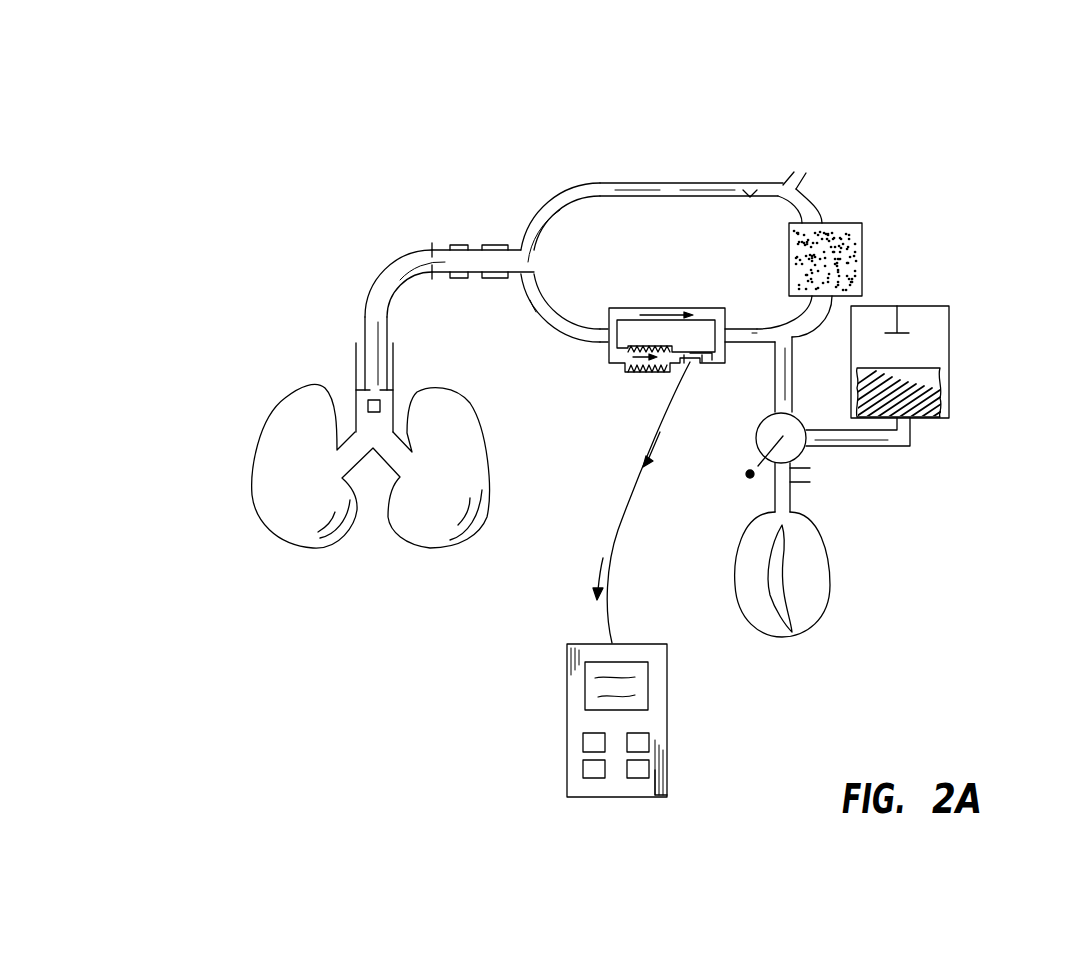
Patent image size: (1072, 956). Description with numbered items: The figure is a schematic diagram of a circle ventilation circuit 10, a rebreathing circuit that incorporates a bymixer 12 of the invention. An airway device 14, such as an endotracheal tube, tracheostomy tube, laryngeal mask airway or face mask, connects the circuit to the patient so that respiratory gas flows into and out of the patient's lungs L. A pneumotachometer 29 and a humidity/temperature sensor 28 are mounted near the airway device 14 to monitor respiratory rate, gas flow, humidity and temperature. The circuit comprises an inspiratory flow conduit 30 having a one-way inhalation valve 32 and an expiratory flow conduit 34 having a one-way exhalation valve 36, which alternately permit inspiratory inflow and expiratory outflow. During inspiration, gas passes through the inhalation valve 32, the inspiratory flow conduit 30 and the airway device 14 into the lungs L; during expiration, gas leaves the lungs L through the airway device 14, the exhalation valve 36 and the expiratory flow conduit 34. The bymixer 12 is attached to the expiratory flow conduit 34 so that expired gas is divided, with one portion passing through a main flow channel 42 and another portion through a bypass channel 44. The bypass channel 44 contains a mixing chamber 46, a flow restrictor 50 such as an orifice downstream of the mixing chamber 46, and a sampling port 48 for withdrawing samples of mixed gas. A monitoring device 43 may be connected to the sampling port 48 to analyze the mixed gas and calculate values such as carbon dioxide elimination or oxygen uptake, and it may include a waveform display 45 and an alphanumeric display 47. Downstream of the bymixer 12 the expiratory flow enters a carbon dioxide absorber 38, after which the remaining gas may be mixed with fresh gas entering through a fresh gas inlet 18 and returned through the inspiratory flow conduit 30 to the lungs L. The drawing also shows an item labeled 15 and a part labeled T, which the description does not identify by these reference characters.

The circle ventilation circuit 10 is at (968, 131).
The bymixer device 12 is at (598, 360).
The airway device 14 is at (385, 285).
The reservoir 15 is at (948, 340).
The fresh gas inlet 18 is at (805, 168).
The humidity/temperature sensor 28 is at (452, 243).
The pneumotachometer 29 is at (492, 245).
The inspiratory flow conduit 30 is at (650, 186).
The one-way inhalation valve 32 is at (745, 186).
The expiratory flow conduit 34 is at (535, 317).
The one-way exhalation valve 36 is at (748, 337).
The CO2 absorber 38 is at (868, 260).
The main flow channel 42 is at (683, 312).
The monitoring device 43 is at (567, 723).
The bypass channel 44 is at (665, 372).
The waveform display 45 is at (648, 697).
The mixing chamber 46 is at (660, 365).
The alphanumeric display 47 is at (663, 768).
The sampling port 48 is at (687, 363).
The flow restrictor 50 is at (695, 366).
The tracheal tube T is at (353, 362).
The patient's lungs L is at (270, 482).